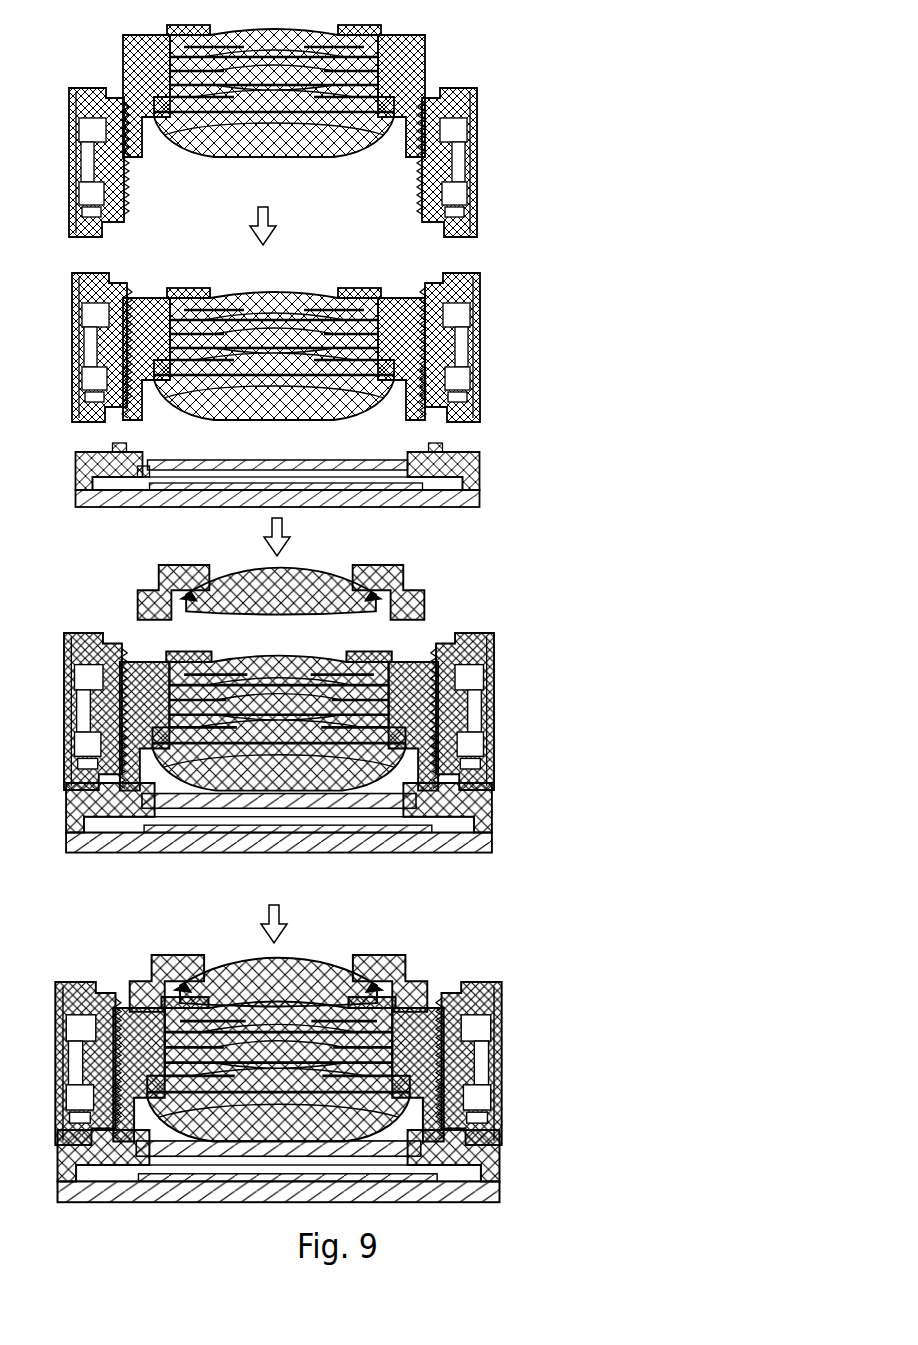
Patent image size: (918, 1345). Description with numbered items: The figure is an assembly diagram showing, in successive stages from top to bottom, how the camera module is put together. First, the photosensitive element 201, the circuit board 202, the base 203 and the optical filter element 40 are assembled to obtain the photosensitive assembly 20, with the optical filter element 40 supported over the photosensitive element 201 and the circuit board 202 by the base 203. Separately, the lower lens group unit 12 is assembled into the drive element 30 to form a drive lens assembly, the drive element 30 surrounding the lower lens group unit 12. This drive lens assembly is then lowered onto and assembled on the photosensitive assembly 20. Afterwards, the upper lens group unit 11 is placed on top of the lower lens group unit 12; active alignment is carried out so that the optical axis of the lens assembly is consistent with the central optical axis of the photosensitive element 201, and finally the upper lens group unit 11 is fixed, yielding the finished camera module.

The upper lens group unit 11 is at (412, 583).
The lower lens group unit 12 is at (438, 60).
The photosensitive assembly 20 is at (327, 813).
The drive element 30 is at (475, 162).
The optical filter element 40 is at (293, 460).
The photosensitive element 201 is at (142, 450).
The circuit board 202 is at (286, 457).
The base 203 is at (102, 457).